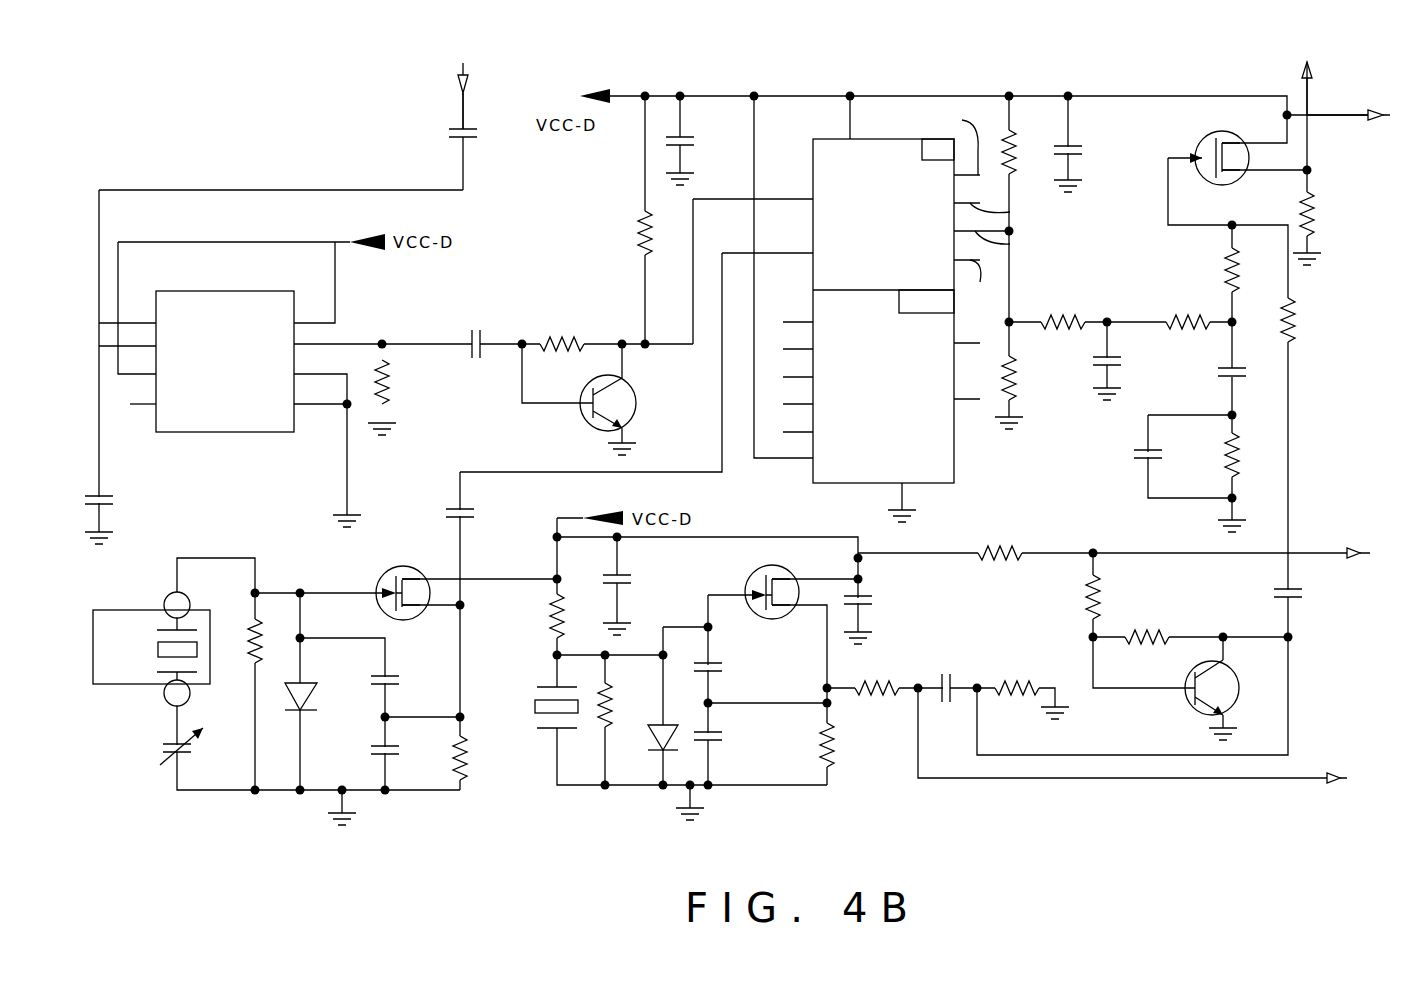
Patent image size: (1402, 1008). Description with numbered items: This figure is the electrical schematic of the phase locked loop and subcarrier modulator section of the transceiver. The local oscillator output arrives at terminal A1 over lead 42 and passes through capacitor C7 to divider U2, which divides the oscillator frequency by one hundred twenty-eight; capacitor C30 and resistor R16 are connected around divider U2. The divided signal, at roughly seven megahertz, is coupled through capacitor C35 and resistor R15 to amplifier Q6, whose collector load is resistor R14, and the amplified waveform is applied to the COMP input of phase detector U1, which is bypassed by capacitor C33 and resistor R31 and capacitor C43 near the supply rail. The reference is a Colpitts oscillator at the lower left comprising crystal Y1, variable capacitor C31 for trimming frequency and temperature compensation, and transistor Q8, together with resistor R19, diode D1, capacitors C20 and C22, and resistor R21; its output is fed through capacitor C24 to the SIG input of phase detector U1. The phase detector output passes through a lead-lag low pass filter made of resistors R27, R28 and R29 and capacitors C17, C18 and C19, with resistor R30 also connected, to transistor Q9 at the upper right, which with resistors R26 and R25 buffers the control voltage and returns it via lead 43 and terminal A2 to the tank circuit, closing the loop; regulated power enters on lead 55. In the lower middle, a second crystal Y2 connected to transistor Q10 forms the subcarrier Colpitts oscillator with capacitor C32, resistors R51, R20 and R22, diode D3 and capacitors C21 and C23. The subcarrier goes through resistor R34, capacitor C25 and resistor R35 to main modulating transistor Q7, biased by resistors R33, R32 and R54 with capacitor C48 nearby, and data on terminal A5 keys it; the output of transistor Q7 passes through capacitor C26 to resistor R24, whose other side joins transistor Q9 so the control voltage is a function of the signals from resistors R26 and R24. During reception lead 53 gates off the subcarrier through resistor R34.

The antenna input A1 is at (470, 86).
The lead 42 is at (461, 118).
The capacitor C7 is at (467, 140).
The divider U2 is at (205, 288).
The capacitor C30 is at (102, 495).
The resistor R16 is at (390, 382).
The capacitor C35 is at (472, 334).
The resistor R15 is at (578, 340).
The amplifier Q6 is at (590, 426).
The resistor R14 is at (642, 233).
The capacitor C33 is at (686, 137).
The phase detector U1 is at (887, 139).
The resistor R31 is at (1020, 150).
The capacitor C43 is at (1080, 147).
The transistor Q9 is at (1212, 135).
The antenna connection A2 is at (1300, 75).
The lead 43 is at (1310, 93).
The lead 55 is at (1332, 118).
The resistor R25 is at (1320, 214).
The resistor R26 is at (1226, 266).
The resistor R27 is at (1060, 316).
The resistor R28 is at (1198, 312).
The resistor R24 is at (1300, 322).
The resistor R30 is at (1016, 373).
The capacitor C18 is at (1120, 360).
The capacitor C19 is at (1245, 372).
The resistor R29 is at (1240, 457).
The capacitor C17 is at (1140, 462).
The capacitor C24 is at (452, 510).
The transistor Q8 is at (400, 568).
The resistor R19 is at (265, 630).
The crystal Y1 is at (158, 645).
The variable capacitor C31 is at (168, 742).
The diode D1 is at (318, 692).
The capacitor C20 is at (398, 688).
The capacitor C22 is at (398, 757).
The resistor R21 is at (466, 762).
The capacitor C32 is at (622, 576).
The resistor R51 is at (550, 620).
The second crystal Y2 is at (535, 706).
The resistor R20 is at (637, 685).
The diode D3 is at (652, 730).
The capacitor C21 is at (720, 668).
The capacitor C23 is at (720, 738).
The transistor Q10 is at (776, 617).
The resistor R22 is at (838, 750).
The resistor R34 is at (870, 695).
The capacitor C48 is at (870, 598).
The capacitor C25 is at (940, 680).
The resistor R35 is at (1005, 672).
The resistor R33 is at (1000, 542).
The resistor R32 is at (1085, 592).
The resistor R54 is at (1135, 626).
The main modulating transistor Q7 is at (1196, 711).
The capacitor C26 is at (1300, 600).
The output connection A5 is at (1350, 550).
The lead 53 is at (1232, 780).